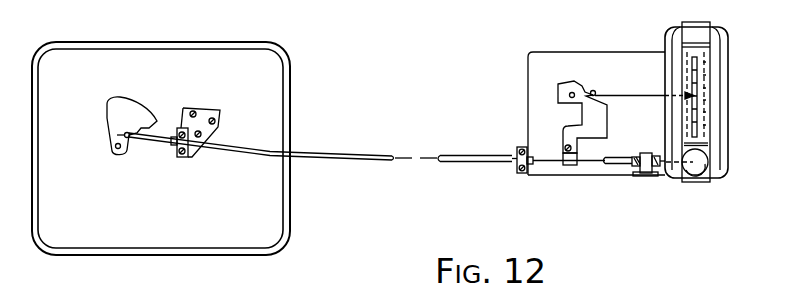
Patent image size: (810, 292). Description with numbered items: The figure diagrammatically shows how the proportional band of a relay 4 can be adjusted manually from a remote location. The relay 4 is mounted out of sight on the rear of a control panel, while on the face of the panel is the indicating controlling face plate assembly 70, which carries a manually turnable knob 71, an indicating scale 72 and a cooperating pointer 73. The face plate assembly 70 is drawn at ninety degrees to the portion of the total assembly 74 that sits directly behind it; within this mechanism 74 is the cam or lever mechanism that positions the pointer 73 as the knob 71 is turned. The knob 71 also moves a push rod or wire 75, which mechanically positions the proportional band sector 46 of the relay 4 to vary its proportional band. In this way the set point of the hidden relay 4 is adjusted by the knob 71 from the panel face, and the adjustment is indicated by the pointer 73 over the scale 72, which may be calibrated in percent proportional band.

The relay 4 is at (191, 42).
The proportional band sector 46 is at (134, 100).
The indicating controlling face plate assembly 70 is at (728, 123).
The manually turnable knob 71 is at (696, 178).
The indicating scale 72 is at (706, 72).
The pointer 73 is at (655, 94).
The total assembly 74 is at (599, 177).
The push rod or wire 75 is at (404, 153).